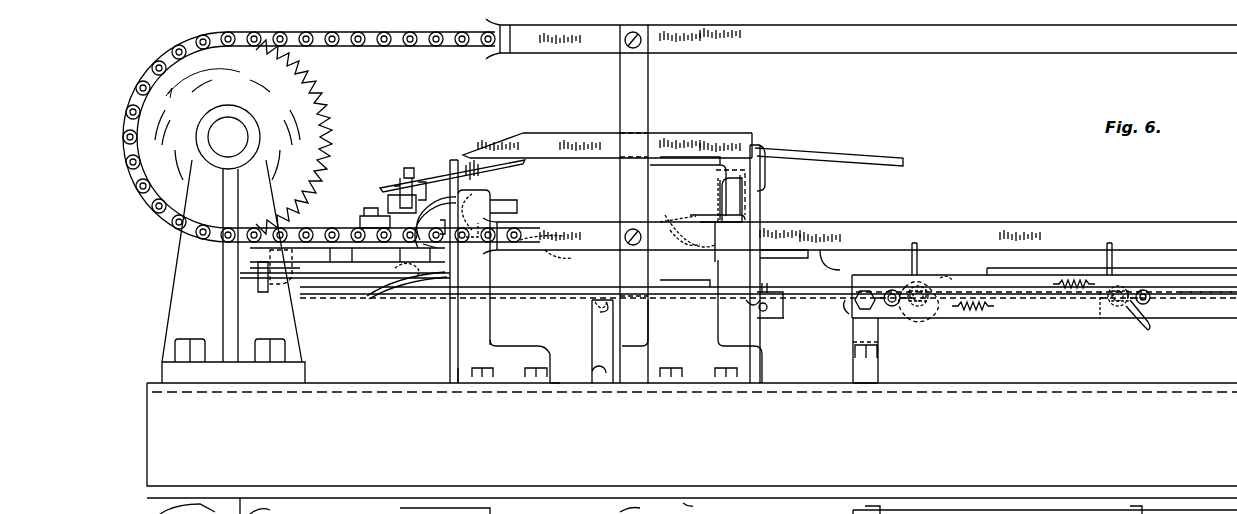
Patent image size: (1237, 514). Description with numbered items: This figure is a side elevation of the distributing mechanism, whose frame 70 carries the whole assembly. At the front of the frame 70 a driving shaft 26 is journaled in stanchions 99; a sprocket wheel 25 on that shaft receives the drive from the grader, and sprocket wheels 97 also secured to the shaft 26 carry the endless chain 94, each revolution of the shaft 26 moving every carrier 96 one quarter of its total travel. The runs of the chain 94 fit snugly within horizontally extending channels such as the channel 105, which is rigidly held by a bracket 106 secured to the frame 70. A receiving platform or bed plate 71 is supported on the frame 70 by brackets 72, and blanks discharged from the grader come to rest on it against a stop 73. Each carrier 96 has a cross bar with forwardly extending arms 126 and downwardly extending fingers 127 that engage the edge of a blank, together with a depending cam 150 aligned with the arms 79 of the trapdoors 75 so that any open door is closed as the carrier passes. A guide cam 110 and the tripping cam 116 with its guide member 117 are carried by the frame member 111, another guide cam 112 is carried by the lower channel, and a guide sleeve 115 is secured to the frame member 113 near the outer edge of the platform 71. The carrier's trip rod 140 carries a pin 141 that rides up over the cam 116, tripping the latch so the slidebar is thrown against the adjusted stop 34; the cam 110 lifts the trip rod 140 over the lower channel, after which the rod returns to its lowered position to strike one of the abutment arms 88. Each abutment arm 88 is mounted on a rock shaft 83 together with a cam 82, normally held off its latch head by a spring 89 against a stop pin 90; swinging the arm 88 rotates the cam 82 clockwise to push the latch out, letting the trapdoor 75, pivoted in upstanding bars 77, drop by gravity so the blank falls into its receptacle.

The shaft 26 is at (243, 137).
The endless chain 94 is at (188, 36).
The sprocket wheel 97 is at (149, 94).
The stanchion 99 is at (182, 256).
The downwardly extending finger 127 is at (258, 275).
The depending cam 150 is at (278, 285).
The carrier 96 is at (351, 295).
The forwardly extending arm 126 is at (404, 281).
The arm or pin 141 is at (404, 171).
The trip rod 140 is at (412, 168).
The frame member 113 is at (483, 194).
The guide sleeve 115 is at (435, 233).
The guide cam 112 is at (542, 254).
The receiving platform or bed plate 71 is at (518, 300).
The bracket 72 is at (853, 327).
The stop 73 is at (655, 293).
The guide cam 110 is at (549, 138).
The bracket 106 is at (650, 82).
The channel 105 is at (958, 53).
The stop 34 is at (700, 178).
The frame member 111 is at (736, 186).
The tripping cam 116 is at (700, 222).
The guide member 117 is at (780, 262).
The trapdoor or tilting gate 75 is at (1028, 300).
The cam 82 is at (920, 330).
The rock shaft 83 is at (1113, 338).
The spring 89 is at (1073, 280).
The stop pin 90 is at (1097, 338).
The latch releasing member or abutment arm 88 is at (1112, 258).
The arm or tail 79 is at (1152, 326).
The upstanding bar 77 is at (1185, 305).
The frame 70 is at (692, 434).
The sprocket wheel 25 is at (666, 506).